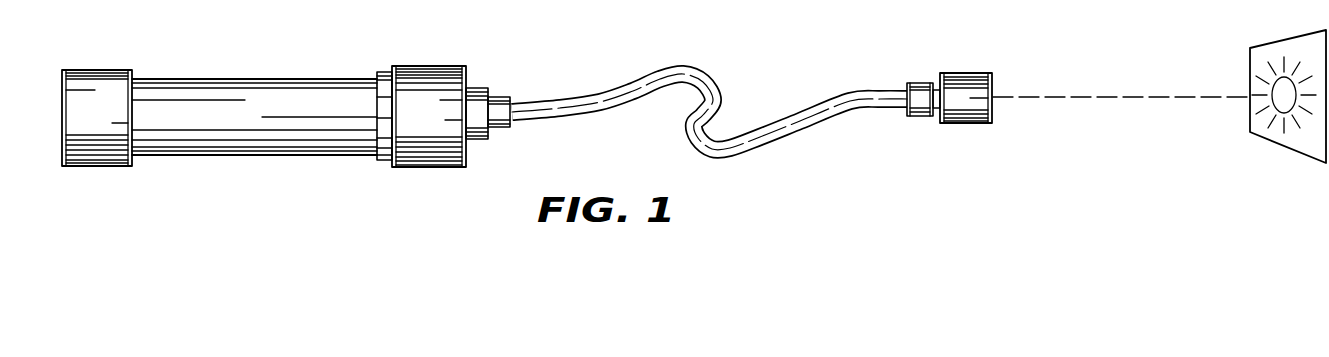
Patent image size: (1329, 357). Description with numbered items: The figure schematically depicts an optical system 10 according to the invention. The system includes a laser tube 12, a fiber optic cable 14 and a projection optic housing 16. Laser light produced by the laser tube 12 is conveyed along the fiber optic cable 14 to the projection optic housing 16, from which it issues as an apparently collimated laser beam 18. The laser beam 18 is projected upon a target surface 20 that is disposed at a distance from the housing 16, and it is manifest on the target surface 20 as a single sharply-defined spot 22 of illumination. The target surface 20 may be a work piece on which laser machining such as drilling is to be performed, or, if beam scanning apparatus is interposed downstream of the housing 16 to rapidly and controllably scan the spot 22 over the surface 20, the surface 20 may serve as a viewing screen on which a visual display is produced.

The optical system 10 is at (168, 178).
The laser tube 12 is at (272, 88).
The fiber optic cable 14 is at (687, 128).
The projection optic housing 16 is at (977, 77).
The laser beam 18 is at (1103, 98).
The target surface 20 is at (1272, 53).
The spot 22 is at (1267, 112).